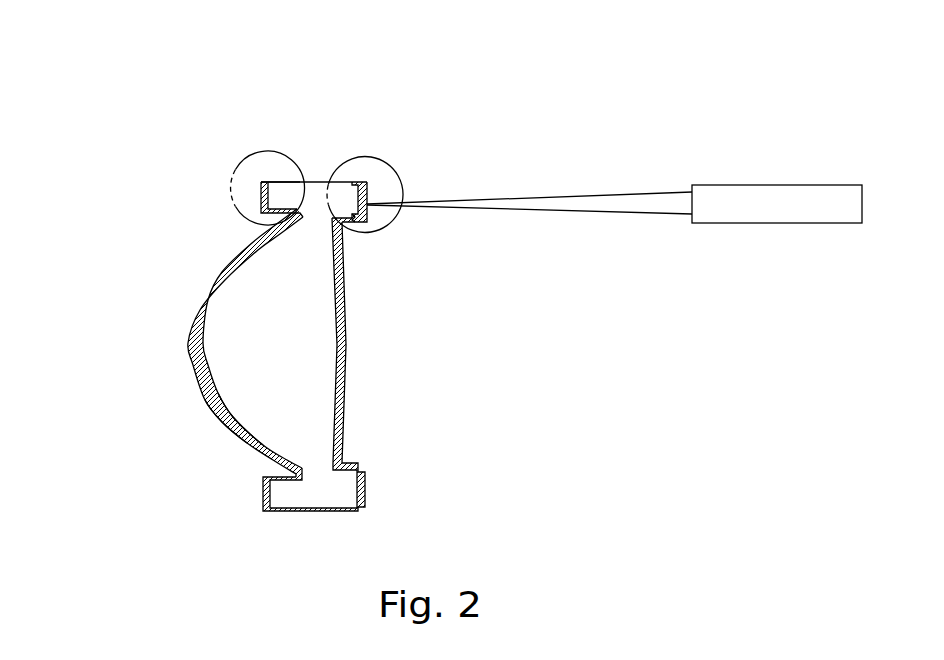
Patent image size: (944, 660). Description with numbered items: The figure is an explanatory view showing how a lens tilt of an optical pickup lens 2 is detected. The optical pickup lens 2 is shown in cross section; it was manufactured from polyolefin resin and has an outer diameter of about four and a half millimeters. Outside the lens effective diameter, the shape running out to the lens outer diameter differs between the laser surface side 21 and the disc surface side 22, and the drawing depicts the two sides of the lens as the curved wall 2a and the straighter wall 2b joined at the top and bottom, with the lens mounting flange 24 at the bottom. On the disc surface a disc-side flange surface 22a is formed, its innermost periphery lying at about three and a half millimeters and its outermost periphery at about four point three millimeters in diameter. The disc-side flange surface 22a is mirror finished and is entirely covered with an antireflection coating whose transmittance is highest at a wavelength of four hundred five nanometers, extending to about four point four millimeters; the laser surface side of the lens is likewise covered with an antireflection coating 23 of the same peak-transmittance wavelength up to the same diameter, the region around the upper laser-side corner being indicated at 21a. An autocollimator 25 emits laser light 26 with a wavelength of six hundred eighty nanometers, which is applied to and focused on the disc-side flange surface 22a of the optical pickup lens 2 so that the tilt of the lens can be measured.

The optical pickup lens 2 is at (358, 128).
The curved reflecting wall of mirror 2a is at (188, 353).
The straight wall of mirror 2b is at (345, 347).
The laser surface side 21 is at (232, 197).
The surface of first end portion 21a is at (257, 180).
The disc surface side 22 is at (385, 177).
The disc-side flange surface 22a is at (368, 220).
The antireflection coating 23 is at (205, 398).
The antireflection coating 24 is at (343, 425).
The autocollimator 25 is at (825, 210).
The laser light 26 is at (585, 203).